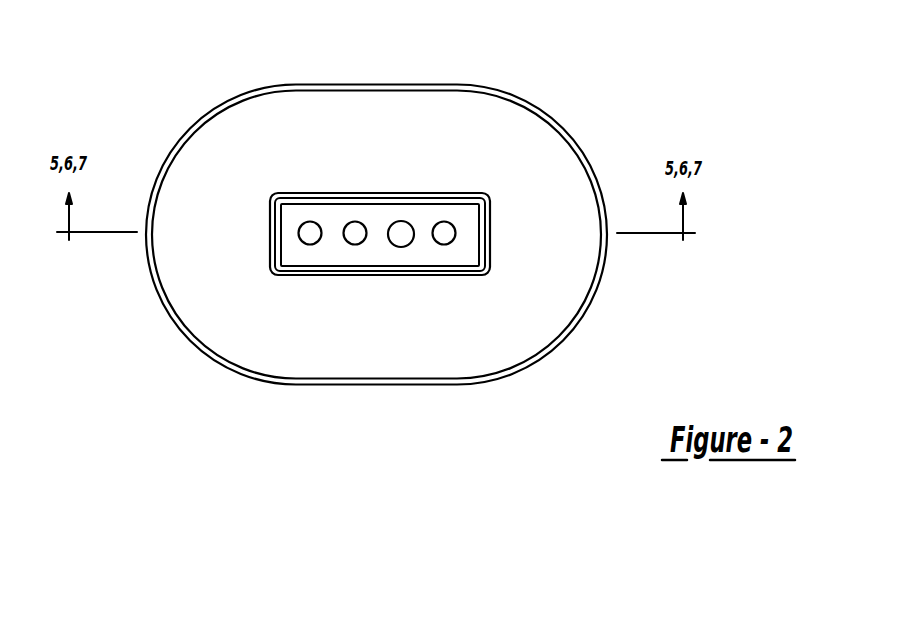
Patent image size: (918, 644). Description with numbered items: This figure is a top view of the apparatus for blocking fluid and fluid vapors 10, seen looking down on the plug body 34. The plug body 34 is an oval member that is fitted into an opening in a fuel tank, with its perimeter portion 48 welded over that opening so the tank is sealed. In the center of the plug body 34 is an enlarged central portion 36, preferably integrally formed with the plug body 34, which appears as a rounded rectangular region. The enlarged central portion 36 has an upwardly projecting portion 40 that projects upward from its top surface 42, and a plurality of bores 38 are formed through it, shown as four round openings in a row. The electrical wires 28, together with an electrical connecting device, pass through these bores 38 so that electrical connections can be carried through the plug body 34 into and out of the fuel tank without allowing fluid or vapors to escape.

The apparatus for blocking fluid and fluid vapors 10 is at (429, 215).
The electrical wires 28 is at (355, 245).
The plug body 34 is at (565, 289).
The enlarged central portion 36 is at (378, 193).
The bores 38 is at (401, 221).
The upwardly projecting portion 40 is at (427, 218).
The top surface 42 is at (540, 256).
The perimeter portion 48 is at (532, 365).